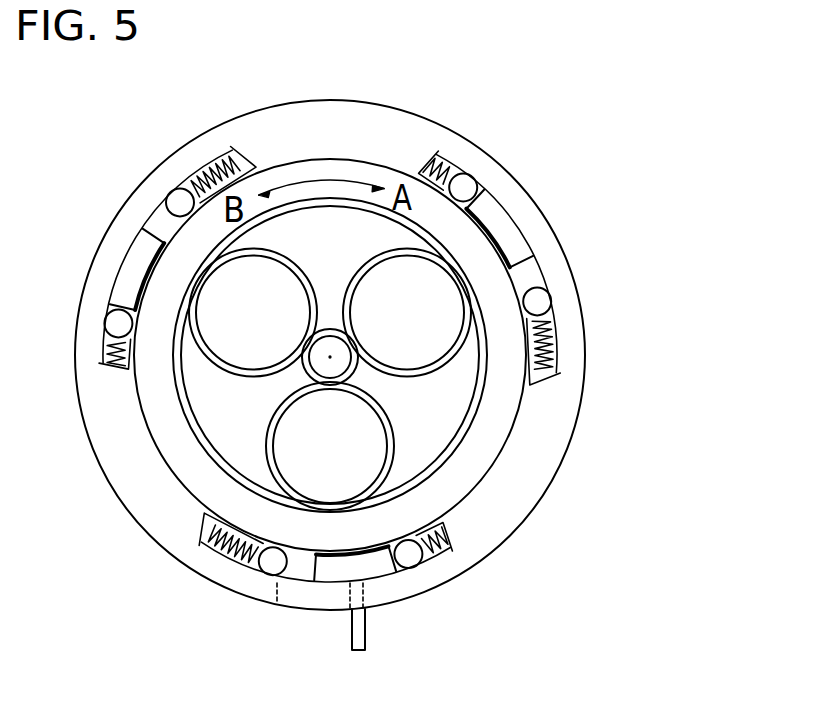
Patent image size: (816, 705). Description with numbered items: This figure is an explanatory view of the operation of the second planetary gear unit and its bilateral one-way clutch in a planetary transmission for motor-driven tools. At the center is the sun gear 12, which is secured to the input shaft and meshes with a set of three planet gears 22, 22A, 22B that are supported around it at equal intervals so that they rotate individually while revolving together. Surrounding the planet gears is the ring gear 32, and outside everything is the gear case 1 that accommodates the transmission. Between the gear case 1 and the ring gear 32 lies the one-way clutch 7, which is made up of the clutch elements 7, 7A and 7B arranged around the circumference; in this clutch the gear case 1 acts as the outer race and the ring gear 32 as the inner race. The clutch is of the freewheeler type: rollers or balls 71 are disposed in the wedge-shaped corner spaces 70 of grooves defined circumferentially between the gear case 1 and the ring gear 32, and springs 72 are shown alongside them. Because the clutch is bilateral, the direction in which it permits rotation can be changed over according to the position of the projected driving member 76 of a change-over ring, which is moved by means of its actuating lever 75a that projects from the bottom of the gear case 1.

The gear case 1 is at (567, 412).
The one-way clutch 7 is at (518, 183).
The clutch element 7A is at (298, 583).
The clutch element 7B is at (142, 233).
The sun gear 12 is at (331, 343).
The planet gears 22 is at (477, 289).
The planet gear 22A is at (265, 453).
The planet gear 22B is at (270, 265).
The ring gear 32 is at (478, 460).
The wedge-shaped corner spaces 70 is at (556, 318).
The rollers or balls 71 is at (472, 180).
The spring 72 is at (447, 172).
The actuating lever 75a is at (365, 642).
The projected driving member 76 is at (512, 246).